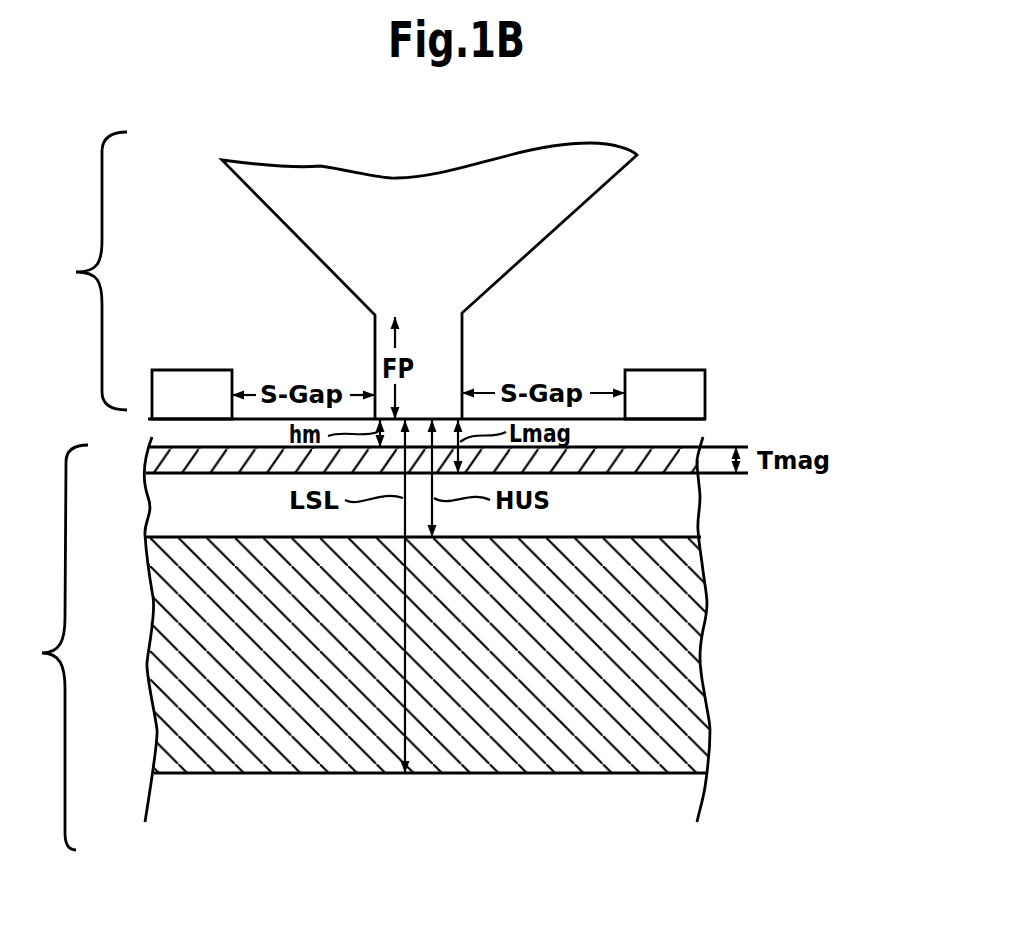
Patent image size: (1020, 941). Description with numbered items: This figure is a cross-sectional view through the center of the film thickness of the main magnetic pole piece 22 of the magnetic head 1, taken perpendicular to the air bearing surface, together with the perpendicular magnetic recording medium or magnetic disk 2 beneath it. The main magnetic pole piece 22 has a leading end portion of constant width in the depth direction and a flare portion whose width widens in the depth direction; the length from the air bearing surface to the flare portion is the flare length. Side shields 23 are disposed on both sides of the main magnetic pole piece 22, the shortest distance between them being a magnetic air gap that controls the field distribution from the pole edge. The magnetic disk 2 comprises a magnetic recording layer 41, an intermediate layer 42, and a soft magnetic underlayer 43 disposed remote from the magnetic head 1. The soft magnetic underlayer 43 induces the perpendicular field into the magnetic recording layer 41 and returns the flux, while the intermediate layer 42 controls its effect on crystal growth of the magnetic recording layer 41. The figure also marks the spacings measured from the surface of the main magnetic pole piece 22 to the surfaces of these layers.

The magnetic head 1 is at (87, 271).
The magnetic disk 2 is at (49, 647).
The main magnetic pole piece 22 is at (500, 252).
The side shield 23 is at (177, 389).
The magnetic recording layer 41 is at (620, 463).
The intermediate layer 42 is at (620, 500).
The soft magnetic underlayer 43 is at (620, 662).